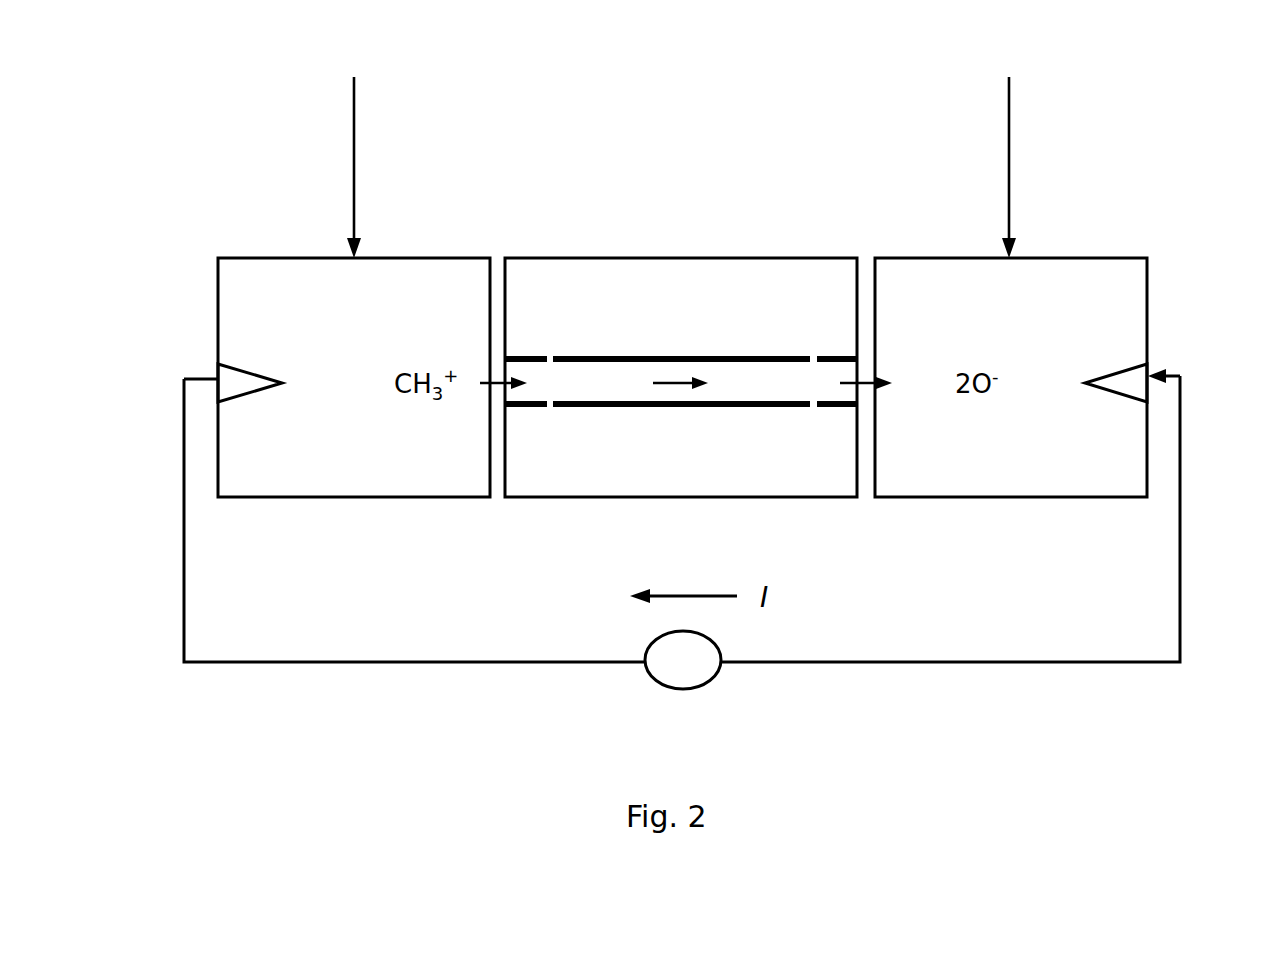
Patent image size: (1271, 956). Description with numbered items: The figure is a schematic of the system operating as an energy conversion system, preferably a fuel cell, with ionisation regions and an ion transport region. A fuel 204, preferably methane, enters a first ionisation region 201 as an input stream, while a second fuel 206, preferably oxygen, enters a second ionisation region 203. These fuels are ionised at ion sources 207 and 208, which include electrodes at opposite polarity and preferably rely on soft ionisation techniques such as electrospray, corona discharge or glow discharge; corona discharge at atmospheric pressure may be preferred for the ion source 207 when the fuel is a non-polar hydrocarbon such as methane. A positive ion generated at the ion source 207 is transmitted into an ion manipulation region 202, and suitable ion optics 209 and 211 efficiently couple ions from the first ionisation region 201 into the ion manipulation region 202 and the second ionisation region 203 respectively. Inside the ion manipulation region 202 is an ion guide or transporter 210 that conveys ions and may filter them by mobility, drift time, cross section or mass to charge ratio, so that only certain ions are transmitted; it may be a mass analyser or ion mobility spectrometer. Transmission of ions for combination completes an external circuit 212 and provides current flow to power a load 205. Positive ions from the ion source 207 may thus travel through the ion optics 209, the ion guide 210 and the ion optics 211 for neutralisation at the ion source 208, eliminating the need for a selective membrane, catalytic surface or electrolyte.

The first ionisation region 201 is at (354, 377).
The ion manipulation region 202 is at (681, 377).
The second ionisation region 203 is at (1011, 377).
The fuel 204 is at (330, 147).
The load 205 is at (683, 686).
The second fuel 206 is at (996, 147).
The ion source 207 is at (202, 395).
The ion source 208 is at (1169, 392).
The ion optics 209 is at (533, 409).
The ion guide or transporter 210 is at (681, 409).
The ion optics 211 is at (825, 409).
The circuit 212 is at (682, 548).